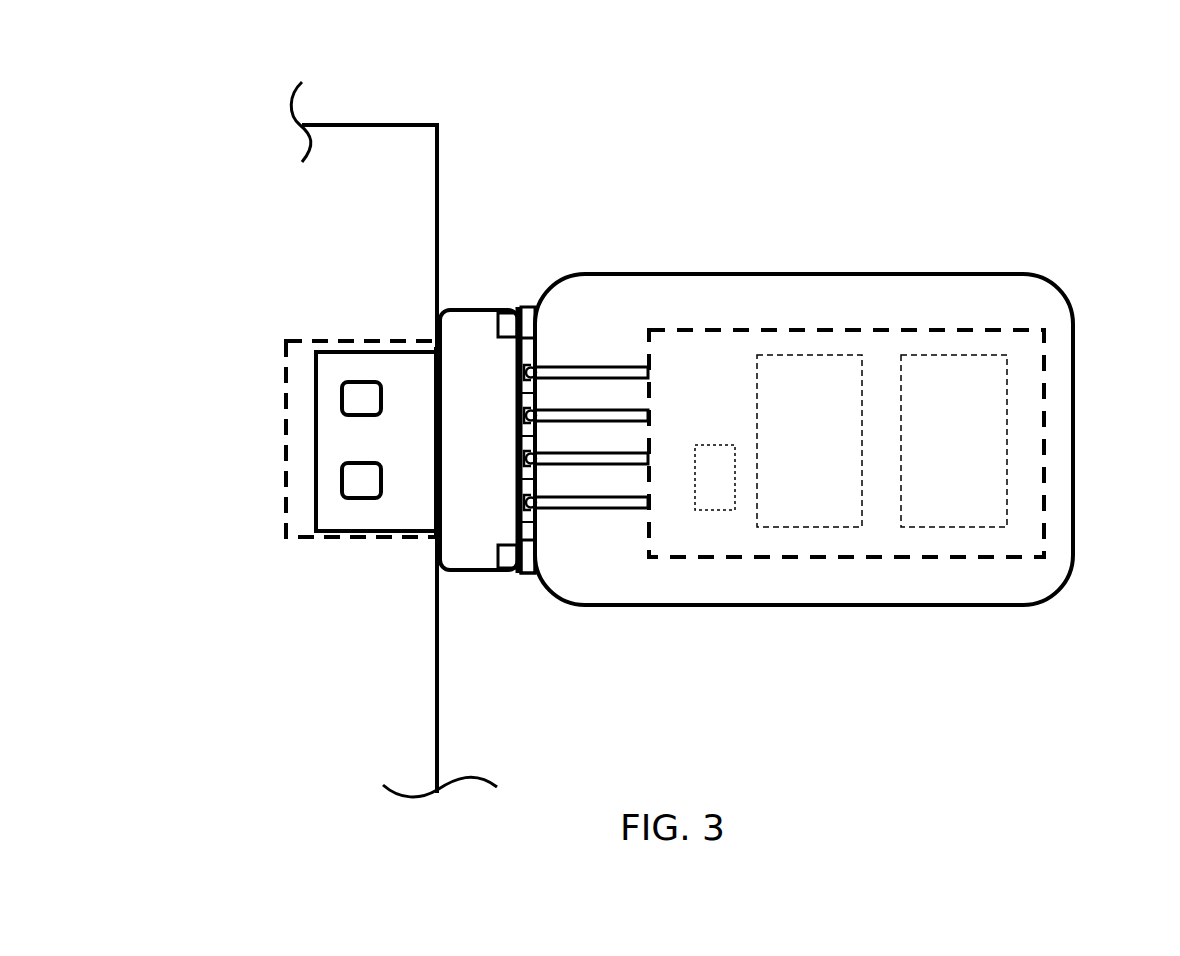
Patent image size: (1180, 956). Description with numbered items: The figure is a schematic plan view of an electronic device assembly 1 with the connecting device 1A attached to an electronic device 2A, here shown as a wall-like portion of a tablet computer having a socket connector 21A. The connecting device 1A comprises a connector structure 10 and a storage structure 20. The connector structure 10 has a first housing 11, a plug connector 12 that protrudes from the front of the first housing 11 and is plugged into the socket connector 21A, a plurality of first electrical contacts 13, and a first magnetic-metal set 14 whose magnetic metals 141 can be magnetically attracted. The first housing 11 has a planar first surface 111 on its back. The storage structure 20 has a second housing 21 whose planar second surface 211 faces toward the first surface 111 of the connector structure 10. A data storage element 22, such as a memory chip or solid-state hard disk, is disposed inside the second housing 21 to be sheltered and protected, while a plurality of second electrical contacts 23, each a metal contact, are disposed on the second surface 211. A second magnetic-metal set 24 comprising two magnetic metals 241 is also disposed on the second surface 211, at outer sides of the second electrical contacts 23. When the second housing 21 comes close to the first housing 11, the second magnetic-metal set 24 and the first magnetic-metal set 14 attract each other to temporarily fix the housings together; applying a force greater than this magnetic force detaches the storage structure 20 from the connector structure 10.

The electronic device assembly 1 is at (249, 83).
The connecting device 1A is at (757, 262).
The electronic device 2A is at (442, 137).
The connector structure 10 is at (366, 436).
The first housing 11 is at (479, 398).
The plug connector 12 is at (333, 497).
The first electrical contacts 13 is at (516, 375).
The first magnetic-metal set 14 is at (501, 605).
The magnetic metals 141 is at (506, 573).
The storage structure 20 is at (846, 414).
The second housing 21 is at (960, 272).
The socket connector 21A is at (285, 355).
The data storage element 22 is at (1046, 465).
The second electrical contacts 23 is at (533, 372).
The second magnetic-metal set 24 is at (568, 505).
The magnetic metals 241 is at (531, 573).
The first surface 111 is at (500, 569).
The second surface 211 is at (540, 535).